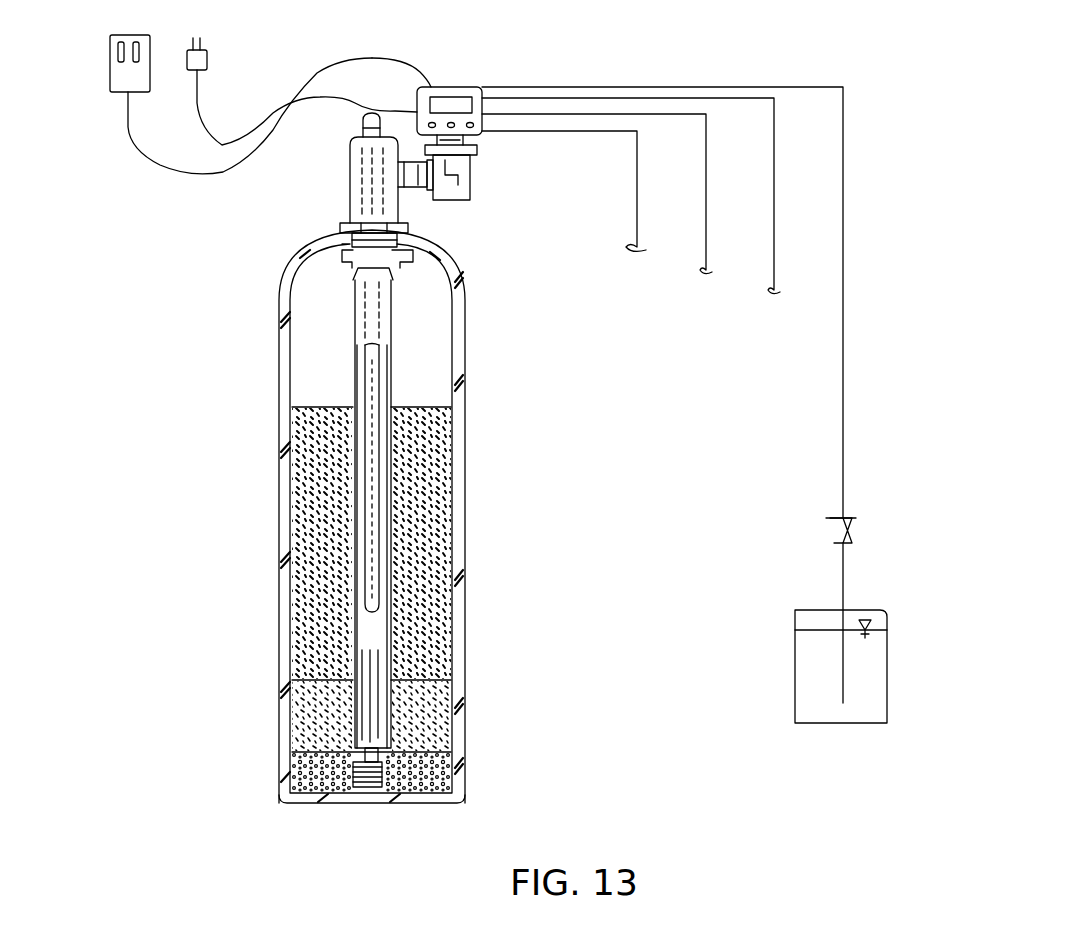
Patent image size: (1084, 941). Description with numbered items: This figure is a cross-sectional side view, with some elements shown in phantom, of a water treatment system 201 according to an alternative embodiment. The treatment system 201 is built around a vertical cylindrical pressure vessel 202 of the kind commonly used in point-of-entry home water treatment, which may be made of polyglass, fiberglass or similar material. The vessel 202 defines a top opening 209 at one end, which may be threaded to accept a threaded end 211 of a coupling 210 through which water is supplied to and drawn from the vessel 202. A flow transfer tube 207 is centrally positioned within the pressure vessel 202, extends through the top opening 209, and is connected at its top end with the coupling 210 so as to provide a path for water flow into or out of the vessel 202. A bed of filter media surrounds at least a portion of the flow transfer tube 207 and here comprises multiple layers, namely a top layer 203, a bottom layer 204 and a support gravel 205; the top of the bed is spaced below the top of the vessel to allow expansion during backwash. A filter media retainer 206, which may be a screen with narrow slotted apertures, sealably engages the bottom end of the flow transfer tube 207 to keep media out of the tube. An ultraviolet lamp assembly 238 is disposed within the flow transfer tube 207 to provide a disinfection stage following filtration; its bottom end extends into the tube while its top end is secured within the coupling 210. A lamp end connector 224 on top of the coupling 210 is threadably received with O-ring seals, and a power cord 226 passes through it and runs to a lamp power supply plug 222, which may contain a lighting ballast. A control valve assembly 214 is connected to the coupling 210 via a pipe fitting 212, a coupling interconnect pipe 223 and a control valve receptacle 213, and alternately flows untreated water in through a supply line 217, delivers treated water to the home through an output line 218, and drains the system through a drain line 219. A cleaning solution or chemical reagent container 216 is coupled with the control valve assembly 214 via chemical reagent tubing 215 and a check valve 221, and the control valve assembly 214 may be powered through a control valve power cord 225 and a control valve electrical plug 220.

The treatment system 201 is at (468, 456).
The pressure vessel 202 is at (462, 518).
The top layer 203 is at (440, 598).
The bottom layer 204 is at (445, 718).
The support gravel 205 is at (445, 760).
The filter media retainer 206 is at (367, 780).
The flow transfer tube 207 is at (395, 366).
The ultraviolet lamp assembly 238 is at (370, 372).
The top opening 209 is at (410, 256).
The threaded end 211 is at (348, 270).
The coupling 210 is at (350, 175).
The pipe fitting 212 is at (400, 190).
The control valve receptacle 213 is at (470, 172).
The coupling interconnect pipe 223 is at (452, 183).
The control valve assembly 214 is at (447, 85).
The cleaning solution or chemical reagent tubing 215 is at (845, 160).
The cleaning solution or chemical reagent container 216 is at (888, 660).
The supply line 217 is at (776, 160).
The output line 218 is at (708, 160).
The drain line 219 is at (639, 160).
The control valve electrical plug 220 is at (207, 56).
The check valve 221 is at (850, 522).
The lamp power supply plug 222 is at (110, 62).
The lamp end connector 224 is at (358, 122).
The control valve power cord 225 is at (303, 70).
The power cord 226 is at (158, 166).